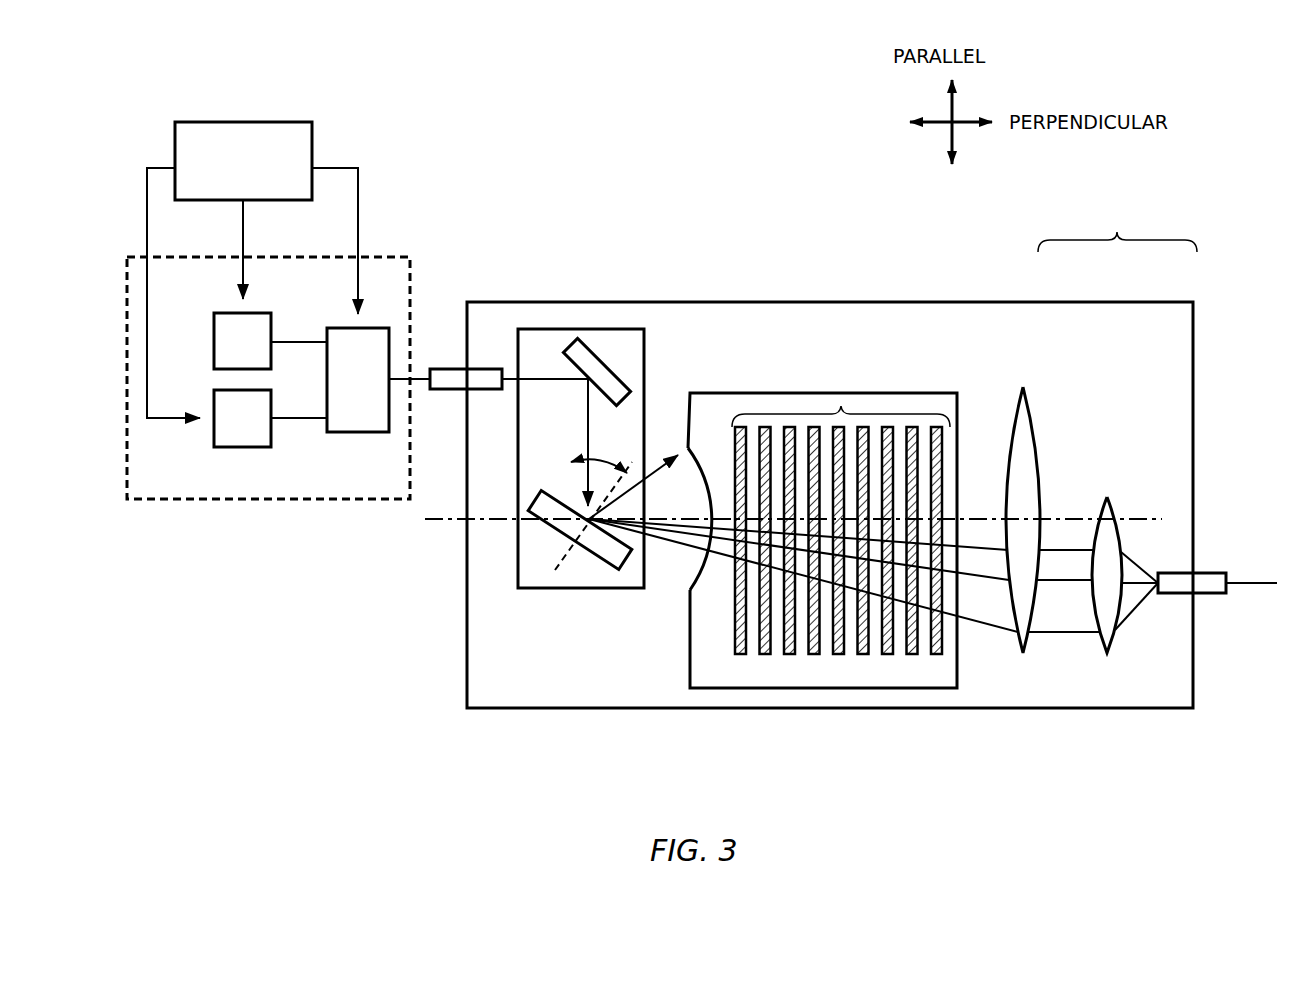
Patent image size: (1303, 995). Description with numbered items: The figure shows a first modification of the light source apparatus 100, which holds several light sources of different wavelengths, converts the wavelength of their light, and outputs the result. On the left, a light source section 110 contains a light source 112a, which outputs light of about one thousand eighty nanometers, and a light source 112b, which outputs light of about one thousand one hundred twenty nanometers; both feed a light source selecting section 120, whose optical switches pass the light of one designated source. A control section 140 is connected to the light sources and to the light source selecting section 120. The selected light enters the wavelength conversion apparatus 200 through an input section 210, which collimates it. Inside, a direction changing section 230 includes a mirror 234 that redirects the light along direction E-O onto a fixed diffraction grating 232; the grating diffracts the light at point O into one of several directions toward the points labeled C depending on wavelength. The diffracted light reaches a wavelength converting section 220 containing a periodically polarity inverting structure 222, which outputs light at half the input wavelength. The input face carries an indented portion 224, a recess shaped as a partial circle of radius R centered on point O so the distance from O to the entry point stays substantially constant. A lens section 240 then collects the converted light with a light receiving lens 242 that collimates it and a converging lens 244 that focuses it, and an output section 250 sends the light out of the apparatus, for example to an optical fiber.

The light source apparatus 100 is at (721, 813).
The light source section 110 is at (270, 499).
The light source 112a is at (232, 313).
The light source 112b is at (240, 447).
The light source selecting section 120 is at (356, 432).
The control section 140 is at (244, 122).
The wavelength conversion apparatus 200 is at (1193, 355).
The input section 210 is at (448, 389).
The wavelength converting section 220 is at (759, 393).
The polarity inverting structure 222 is at (841, 406).
The indented portion 224 is at (690, 574).
The direction changing section 230 is at (547, 590).
The diffraction grating 232 is at (545, 497).
The mirror 234 is at (606, 357).
The lens section 240 is at (1101, 431).
The light receiving lens 242 is at (1023, 387).
The converging lens 244 is at (1107, 497).
The output section 250 is at (1212, 573).